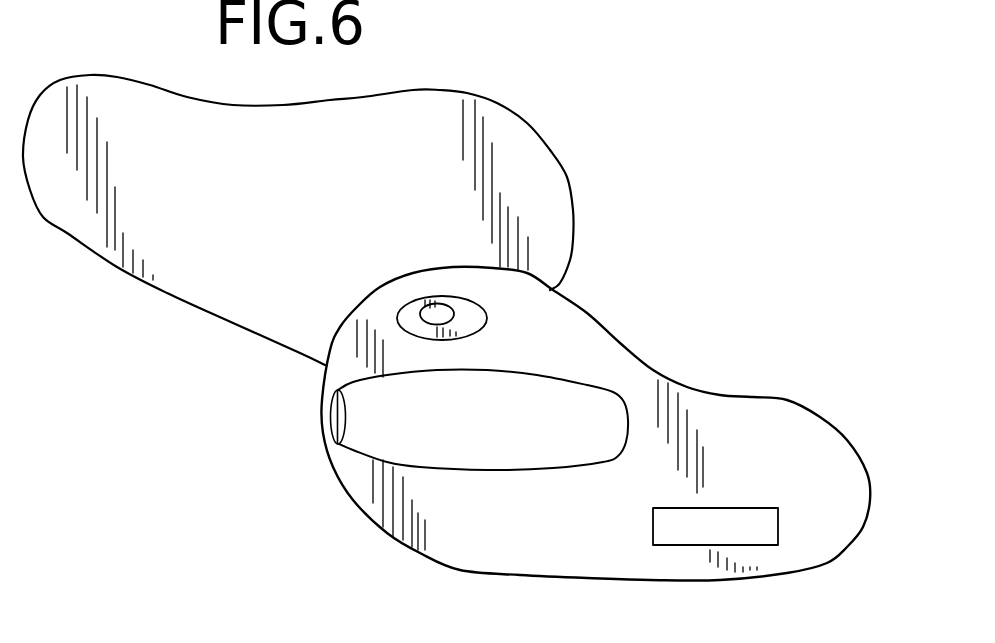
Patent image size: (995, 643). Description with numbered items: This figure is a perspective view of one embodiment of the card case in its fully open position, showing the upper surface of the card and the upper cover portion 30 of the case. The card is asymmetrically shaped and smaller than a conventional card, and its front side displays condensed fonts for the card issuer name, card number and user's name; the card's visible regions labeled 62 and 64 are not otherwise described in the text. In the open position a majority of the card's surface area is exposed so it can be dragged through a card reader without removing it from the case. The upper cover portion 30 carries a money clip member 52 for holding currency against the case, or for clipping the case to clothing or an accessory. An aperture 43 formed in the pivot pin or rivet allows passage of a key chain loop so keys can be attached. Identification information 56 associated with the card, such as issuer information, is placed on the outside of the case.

The upper cover portion 30 is at (497, 537).
The aperture 43 is at (435, 318).
The money clip member 52 is at (567, 468).
The identification information 56 is at (708, 507).
The card 62 is at (442, 89).
The card face 64 is at (90, 76).